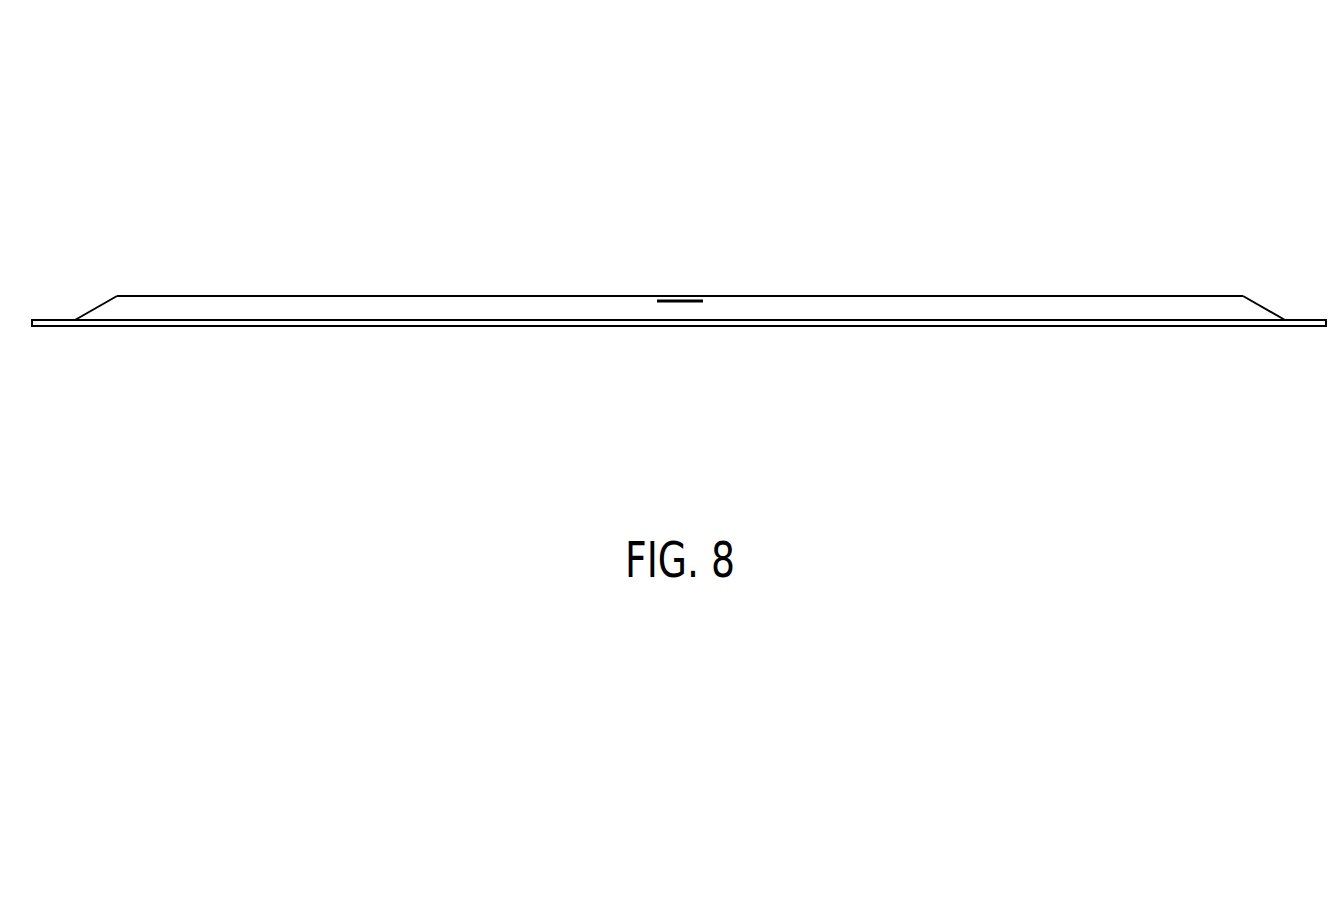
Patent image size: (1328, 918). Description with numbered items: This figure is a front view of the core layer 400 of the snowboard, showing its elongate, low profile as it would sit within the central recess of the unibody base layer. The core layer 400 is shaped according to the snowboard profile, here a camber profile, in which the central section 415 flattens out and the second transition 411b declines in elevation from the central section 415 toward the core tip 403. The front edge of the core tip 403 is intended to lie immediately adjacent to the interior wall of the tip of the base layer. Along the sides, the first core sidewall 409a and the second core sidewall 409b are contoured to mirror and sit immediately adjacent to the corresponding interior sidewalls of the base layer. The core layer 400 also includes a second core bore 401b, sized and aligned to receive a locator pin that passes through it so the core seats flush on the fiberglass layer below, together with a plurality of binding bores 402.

The core layer 400 is at (855, 157).
The second core bore 401b is at (672, 300).
The binding bores 402 is at (772, 297).
The core tip 403 is at (763, 323).
The first core sidewall 409a is at (90, 308).
The second core sidewall 409b is at (1263, 305).
The second transition 411b is at (385, 310).
The central section 415 is at (1072, 295).